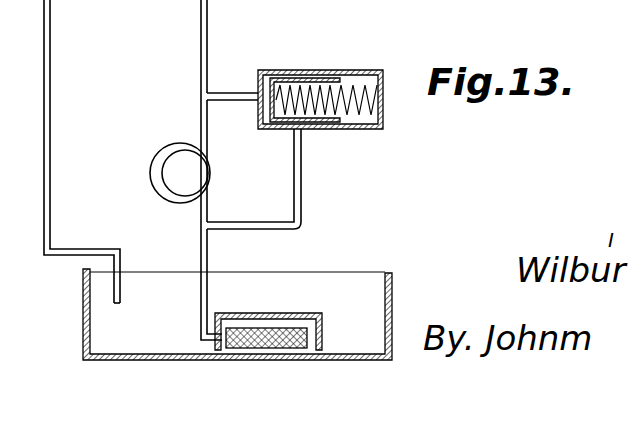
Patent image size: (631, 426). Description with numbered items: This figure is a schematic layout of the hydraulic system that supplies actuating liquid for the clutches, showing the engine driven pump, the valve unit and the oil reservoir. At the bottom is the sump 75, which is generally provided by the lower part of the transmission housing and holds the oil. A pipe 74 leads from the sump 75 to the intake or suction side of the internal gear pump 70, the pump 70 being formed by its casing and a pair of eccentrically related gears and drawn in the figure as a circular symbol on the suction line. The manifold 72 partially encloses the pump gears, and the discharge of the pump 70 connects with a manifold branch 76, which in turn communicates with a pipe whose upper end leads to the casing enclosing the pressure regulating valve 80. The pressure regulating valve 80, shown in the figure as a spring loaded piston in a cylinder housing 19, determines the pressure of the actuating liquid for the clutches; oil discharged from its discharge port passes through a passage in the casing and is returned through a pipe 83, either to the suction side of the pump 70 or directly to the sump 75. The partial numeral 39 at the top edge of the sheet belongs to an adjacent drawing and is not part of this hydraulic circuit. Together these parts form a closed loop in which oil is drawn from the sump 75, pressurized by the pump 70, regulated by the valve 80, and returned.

The cylinder 19 is at (257, 84).
The pressure regulating valve 80 is at (323, 80).
The internal gear pump 70 is at (150, 162).
The pipe 83 is at (302, 172).
The pipe 74 is at (209, 250).
The sump 75 is at (384, 288).
The manifold 72 is at (82, 151).
The manifold branch 76 is at (268, 331).
The numeral (partial) 39 is at (537, 6).